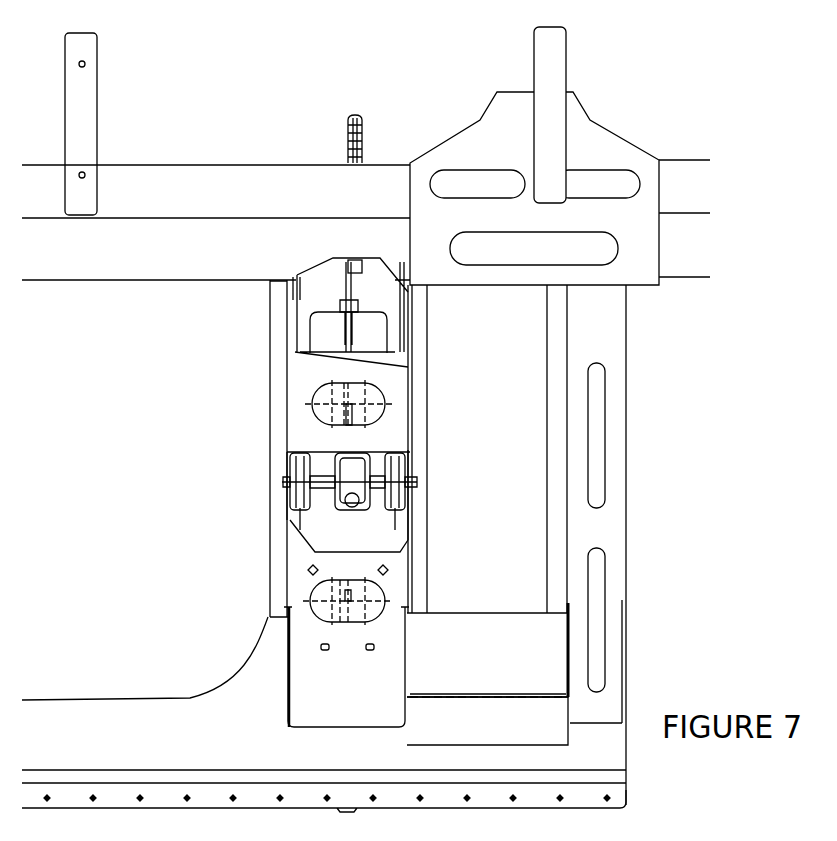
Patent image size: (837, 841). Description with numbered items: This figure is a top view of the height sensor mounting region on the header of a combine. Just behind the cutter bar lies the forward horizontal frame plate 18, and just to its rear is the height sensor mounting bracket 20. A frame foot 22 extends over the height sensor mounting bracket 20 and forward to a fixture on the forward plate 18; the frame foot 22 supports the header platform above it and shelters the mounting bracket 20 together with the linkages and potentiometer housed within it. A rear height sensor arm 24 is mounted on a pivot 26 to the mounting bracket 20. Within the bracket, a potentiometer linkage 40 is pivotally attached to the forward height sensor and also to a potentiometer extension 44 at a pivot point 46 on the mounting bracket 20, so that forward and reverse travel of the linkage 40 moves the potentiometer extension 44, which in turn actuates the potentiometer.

The forward horizontal frame plate 18 is at (217, 740).
The height sensor mounting bracket 20 is at (418, 435).
The frame foot 22 is at (320, 370).
The rear height sensor arm 24 is at (357, 338).
The pivot 26 is at (280, 483).
The potentiometer linkage 40 is at (340, 603).
The potentiometer extension 44 is at (357, 353).
The pivot point 46 is at (320, 412).